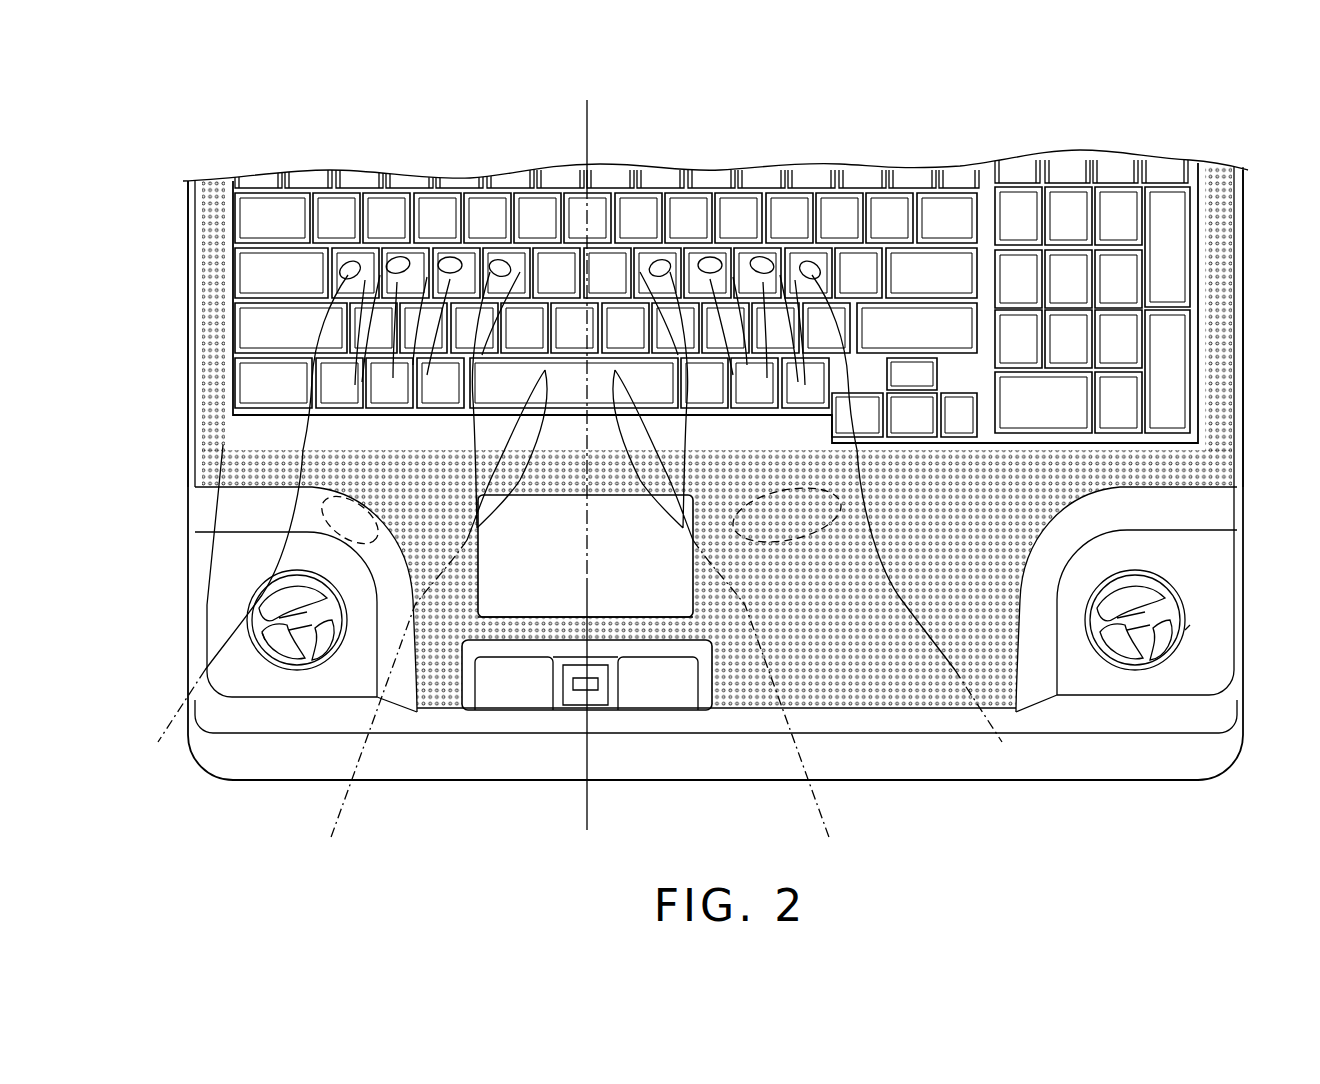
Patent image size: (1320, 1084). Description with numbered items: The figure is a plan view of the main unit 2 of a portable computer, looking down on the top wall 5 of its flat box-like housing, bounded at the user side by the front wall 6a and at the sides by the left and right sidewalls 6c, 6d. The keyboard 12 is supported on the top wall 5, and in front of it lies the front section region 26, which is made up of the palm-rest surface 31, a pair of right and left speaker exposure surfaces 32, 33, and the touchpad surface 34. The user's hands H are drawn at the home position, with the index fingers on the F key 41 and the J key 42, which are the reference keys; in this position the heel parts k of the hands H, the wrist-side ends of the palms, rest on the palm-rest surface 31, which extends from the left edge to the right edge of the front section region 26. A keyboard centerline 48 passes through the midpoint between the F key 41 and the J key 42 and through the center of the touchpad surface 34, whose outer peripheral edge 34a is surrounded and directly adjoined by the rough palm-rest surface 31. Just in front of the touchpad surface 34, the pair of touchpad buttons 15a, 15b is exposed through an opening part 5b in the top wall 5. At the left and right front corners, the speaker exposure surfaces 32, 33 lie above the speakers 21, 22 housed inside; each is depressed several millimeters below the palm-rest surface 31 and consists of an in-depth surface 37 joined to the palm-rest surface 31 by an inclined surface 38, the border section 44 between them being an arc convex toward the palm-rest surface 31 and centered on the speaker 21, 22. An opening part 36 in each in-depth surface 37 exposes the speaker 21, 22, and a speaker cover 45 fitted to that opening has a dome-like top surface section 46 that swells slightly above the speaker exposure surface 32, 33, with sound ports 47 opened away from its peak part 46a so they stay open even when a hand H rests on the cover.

The main unit 2 is at (913, 168).
The top wall 5 is at (755, 705).
The opening part 5b is at (466, 678).
The front wall 6a is at (905, 781).
The sidewall 6c is at (200, 268).
The sidewall 6d is at (1243, 325).
The keyboard 12 is at (715, 289).
The touchpad button 15a is at (518, 697).
The touchpad button 15b is at (673, 697).
The speaker 21 is at (290, 672).
The speaker 22 is at (1130, 665).
The front section region 26 is at (865, 690).
The palm-rest surface 31 is at (958, 672).
The speaker exposure surface 32 is at (217, 589).
The speaker exposure surface 33 is at (1203, 577).
The touchpad surface 34 is at (628, 604).
The outer peripheral edge 34a is at (544, 620).
The opening part 36 is at (1085, 662).
The in-depth surface 37 is at (1190, 692).
The inclined surface 38 is at (1030, 692).
The F key 41 is at (497, 232).
The J key 42 is at (690, 250).
The border section 44 is at (1127, 490).
The speaker cover 45 is at (268, 630).
The top surface section 46 is at (1110, 668).
The peak part 46a is at (1160, 650).
The sound port 47 is at (1090, 610).
The keyboard centerline 48 is at (590, 116).
The hand H is at (683, 526).
The heel part k is at (325, 507).
The F key F is at (505, 276).
The J key J is at (658, 273).